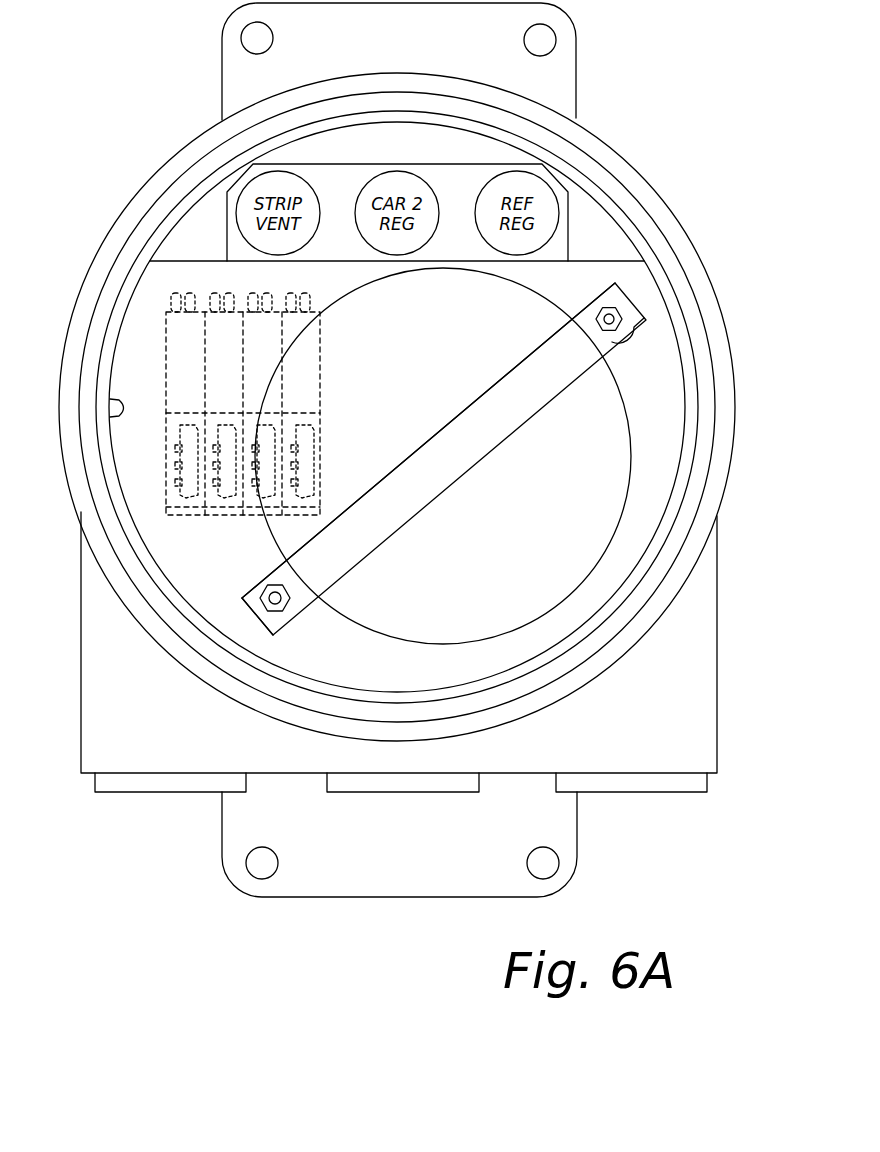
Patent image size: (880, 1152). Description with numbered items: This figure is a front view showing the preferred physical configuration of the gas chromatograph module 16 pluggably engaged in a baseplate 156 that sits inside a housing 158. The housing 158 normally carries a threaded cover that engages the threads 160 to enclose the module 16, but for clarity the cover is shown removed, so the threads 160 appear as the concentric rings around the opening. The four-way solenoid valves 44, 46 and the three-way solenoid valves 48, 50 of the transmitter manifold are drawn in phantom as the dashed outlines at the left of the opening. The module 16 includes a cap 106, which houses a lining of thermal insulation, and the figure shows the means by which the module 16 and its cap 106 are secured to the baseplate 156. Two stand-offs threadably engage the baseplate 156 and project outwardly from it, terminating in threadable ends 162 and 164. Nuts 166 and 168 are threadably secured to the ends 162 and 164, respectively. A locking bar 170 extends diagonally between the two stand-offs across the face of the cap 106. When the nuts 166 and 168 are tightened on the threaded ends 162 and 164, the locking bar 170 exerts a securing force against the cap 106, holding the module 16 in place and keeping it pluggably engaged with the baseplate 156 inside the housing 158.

The GC module 16 is at (621, 382).
The four-way solenoid valve 44 is at (170, 405).
The four-way solenoid valve 46 is at (215, 392).
The three-way solenoid valve 48 is at (250, 367).
The three-way solenoid valve 50 is at (292, 320).
The cap 106 is at (548, 531).
The baseplate 156 is at (166, 518).
The housing 158 is at (718, 568).
The threads 160 is at (699, 452).
The threadable end 162 is at (265, 588).
The threadable end 164 is at (612, 305).
The nut 166 is at (288, 607).
The nut 168 is at (642, 327).
The locking bar 170 is at (477, 425).